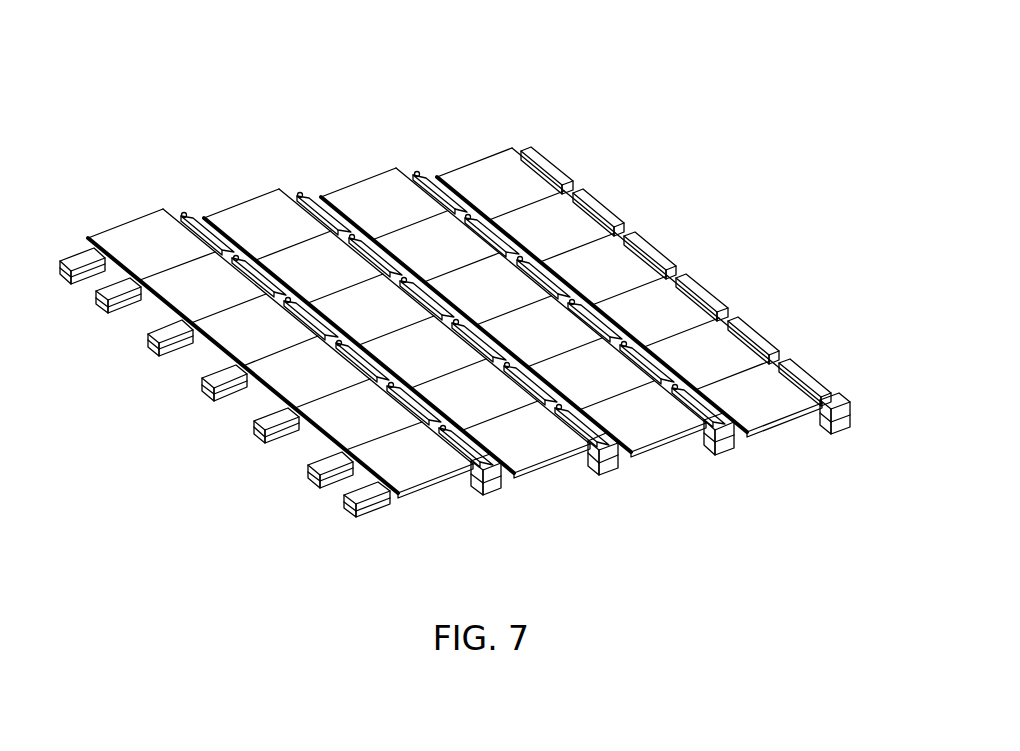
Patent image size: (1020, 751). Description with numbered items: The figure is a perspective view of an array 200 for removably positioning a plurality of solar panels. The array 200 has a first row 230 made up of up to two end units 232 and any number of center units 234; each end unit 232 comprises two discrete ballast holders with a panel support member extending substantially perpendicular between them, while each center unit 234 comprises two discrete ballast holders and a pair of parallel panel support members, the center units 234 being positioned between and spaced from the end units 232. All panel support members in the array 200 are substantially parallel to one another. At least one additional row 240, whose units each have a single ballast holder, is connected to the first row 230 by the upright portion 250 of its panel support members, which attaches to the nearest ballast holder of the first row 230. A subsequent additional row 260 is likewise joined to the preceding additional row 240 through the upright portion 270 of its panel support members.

The array 200 is at (270, 81).
The first row 230 is at (480, 152).
The end unit 232 is at (817, 428).
The center unit 234 is at (628, 235).
The additional row 240 is at (368, 178).
The upright portion 250 is at (703, 447).
The subsequent additional row 260 is at (242, 198).
The upright portion 270 is at (298, 192).